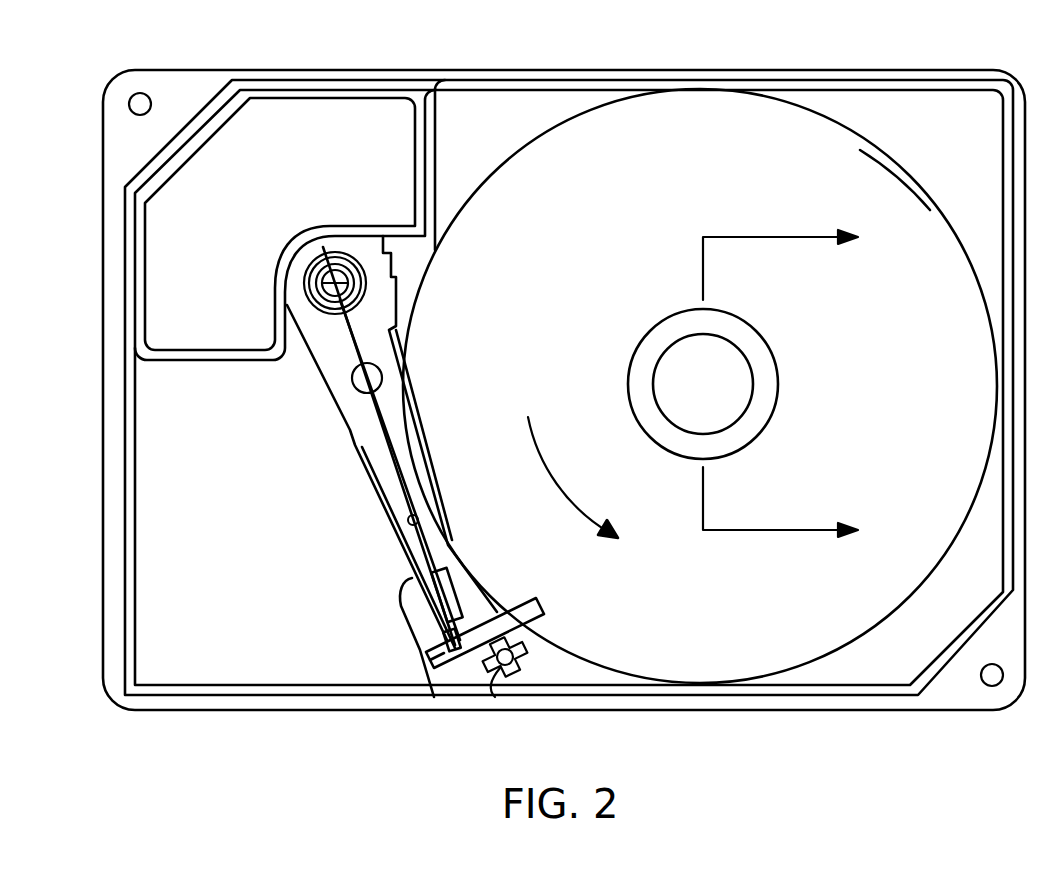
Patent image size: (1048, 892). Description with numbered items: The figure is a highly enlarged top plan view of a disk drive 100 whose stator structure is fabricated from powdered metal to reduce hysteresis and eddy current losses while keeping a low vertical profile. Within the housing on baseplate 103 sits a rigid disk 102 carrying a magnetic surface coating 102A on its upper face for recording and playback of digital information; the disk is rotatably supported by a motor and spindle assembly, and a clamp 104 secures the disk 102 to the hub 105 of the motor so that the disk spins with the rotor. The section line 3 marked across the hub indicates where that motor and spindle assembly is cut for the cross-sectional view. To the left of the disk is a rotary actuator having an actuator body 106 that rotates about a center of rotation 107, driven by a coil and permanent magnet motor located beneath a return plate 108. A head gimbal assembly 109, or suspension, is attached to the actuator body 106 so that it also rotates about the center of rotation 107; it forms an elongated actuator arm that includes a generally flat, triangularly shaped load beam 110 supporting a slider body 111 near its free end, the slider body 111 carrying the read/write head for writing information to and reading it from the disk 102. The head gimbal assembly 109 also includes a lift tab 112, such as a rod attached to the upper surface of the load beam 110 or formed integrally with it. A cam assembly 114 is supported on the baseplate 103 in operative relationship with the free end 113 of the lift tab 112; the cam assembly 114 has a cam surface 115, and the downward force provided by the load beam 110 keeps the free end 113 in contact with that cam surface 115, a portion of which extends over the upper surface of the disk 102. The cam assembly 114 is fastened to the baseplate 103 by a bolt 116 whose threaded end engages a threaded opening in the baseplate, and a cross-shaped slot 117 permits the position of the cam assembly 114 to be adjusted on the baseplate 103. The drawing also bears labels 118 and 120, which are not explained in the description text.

The disk drive 100 is at (98, 134).
The rigid disk 102 is at (588, 222).
The magnetic surface coating 102A is at (884, 170).
The baseplate 103 is at (298, 69).
The clamp 104 is at (742, 333).
The hub 105 is at (685, 396).
The actuator body 106 is at (325, 342).
The center of rotation 107 is at (300, 277).
The return plate 108 is at (353, 125).
The head gimbal assembly 109 is at (397, 358).
The load beam 110 is at (420, 485).
The slider body 111 is at (463, 597).
The lift tab 112 is at (400, 548).
The free end 113 is at (445, 632).
The cam assembly 114 is at (540, 628).
The cam surface 115 is at (438, 654).
The bolt 116 is at (502, 670).
The cross-shaped slot 117 is at (488, 670).
The flex cable 118 is at (408, 458).
The ramp 120 is at (418, 605).
The section line 3- 3 is at (789, 384).